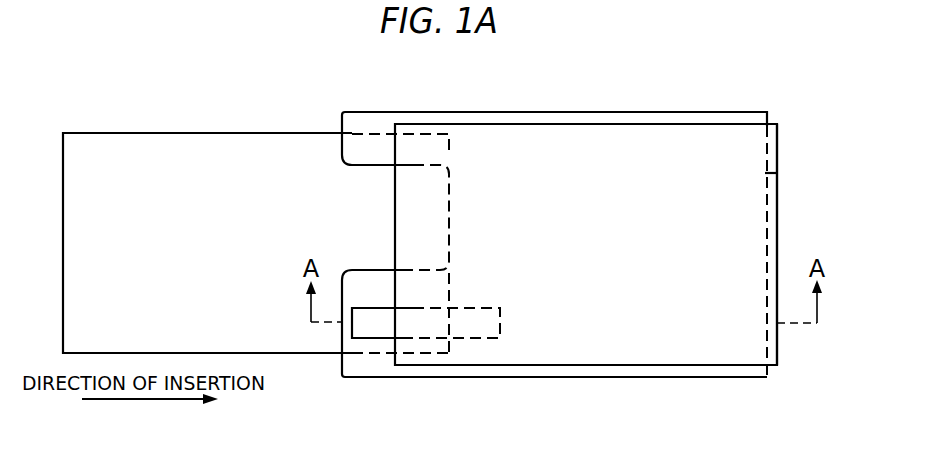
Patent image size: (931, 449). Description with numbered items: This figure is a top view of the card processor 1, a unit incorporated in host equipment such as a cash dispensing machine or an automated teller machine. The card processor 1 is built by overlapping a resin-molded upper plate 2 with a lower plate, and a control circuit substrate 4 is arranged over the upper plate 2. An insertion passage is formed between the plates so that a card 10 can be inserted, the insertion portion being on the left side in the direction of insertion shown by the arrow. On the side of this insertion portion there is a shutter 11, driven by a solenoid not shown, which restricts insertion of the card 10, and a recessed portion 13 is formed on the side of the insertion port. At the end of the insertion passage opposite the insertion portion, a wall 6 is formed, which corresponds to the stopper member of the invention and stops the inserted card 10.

The card processor 1 is at (586, 101).
The upper plate 2 is at (660, 118).
The control circuit substrate 4 is at (774, 150).
The wall 6 is at (777, 176).
The card 10 is at (148, 139).
The shutter 11 is at (357, 310).
The recessed portion 13 is at (356, 204).